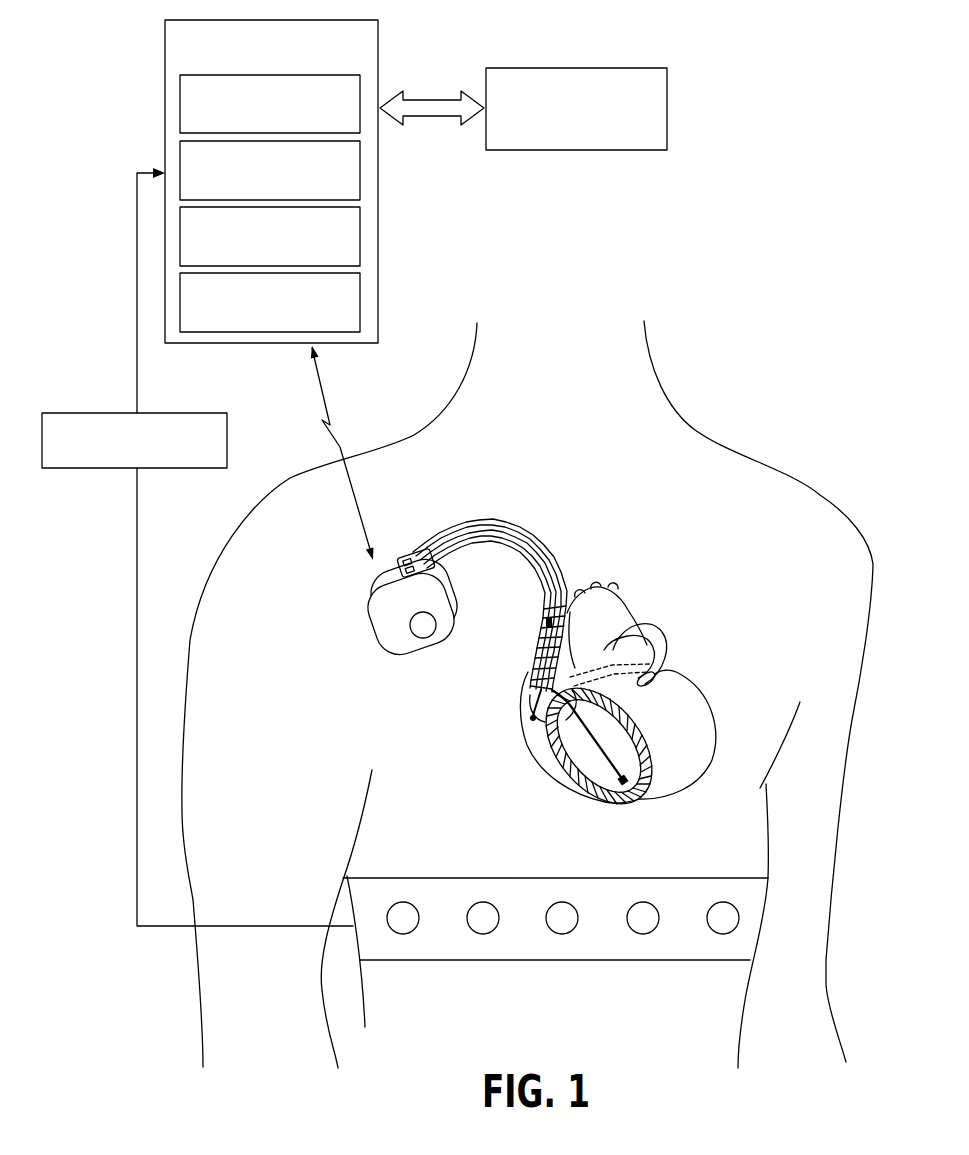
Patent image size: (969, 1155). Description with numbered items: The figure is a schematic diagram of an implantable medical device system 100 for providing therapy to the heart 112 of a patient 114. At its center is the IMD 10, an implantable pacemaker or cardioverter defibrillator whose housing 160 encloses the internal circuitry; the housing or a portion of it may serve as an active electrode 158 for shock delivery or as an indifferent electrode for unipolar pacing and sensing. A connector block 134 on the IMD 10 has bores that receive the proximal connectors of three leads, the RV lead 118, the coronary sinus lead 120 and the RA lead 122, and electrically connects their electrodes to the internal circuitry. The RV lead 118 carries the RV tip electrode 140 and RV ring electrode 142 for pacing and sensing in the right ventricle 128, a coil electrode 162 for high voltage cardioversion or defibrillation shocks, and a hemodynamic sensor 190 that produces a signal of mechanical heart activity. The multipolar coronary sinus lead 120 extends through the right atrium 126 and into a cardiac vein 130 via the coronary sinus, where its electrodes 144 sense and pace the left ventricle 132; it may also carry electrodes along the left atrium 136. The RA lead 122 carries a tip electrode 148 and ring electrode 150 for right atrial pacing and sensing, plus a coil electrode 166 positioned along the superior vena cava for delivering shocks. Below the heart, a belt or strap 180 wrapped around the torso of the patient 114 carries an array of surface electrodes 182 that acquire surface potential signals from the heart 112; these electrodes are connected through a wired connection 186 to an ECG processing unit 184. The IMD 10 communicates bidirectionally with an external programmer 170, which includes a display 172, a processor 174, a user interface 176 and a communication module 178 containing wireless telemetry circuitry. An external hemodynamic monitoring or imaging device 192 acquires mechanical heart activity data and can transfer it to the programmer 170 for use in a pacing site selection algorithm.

The implantable medical device 10 is at (330, 630).
The implantable medical device system 100 is at (686, 266).
The heart 112 is at (702, 804).
The patient 114 is at (766, 467).
The RV lead 118 is at (500, 530).
The coronary sinus lead 120 is at (552, 545).
The RA lead 122 is at (540, 590).
The right atrium 126 is at (530, 700).
The right ventricle 128 is at (585, 759).
The cardiac vein 130 is at (578, 678).
The left ventricle 132 is at (688, 738).
The connector block 134 is at (386, 619).
The left atrium 136 is at (660, 640).
The RV tip electrode 140 is at (650, 786).
The RV ring electrode 142 is at (607, 768).
The electrodes 144 is at (663, 685).
The tip electrode 148 is at (545, 690).
The ring electrode 150 is at (527, 683).
The active electrode 158 is at (423, 640).
The housing 160 is at (410, 614).
The coil electrode 162 is at (570, 745).
The coil electrode 166 is at (545, 622).
The programmer 170 is at (256, 69).
The display 172 is at (256, 124).
The processor 174 is at (256, 191).
The user interface 176 is at (256, 257).
The communication module 178 is at (256, 324).
The belt or strap 180 is at (555, 919).
The surface electrodes 182 is at (594, 930).
The ECG processing unit 184 is at (227, 445).
The wired connection 186 is at (137, 608).
The hemodynamic sensor 190 is at (635, 785).
The external hemodynamic monitoring or imaging device 192 is at (550, 68).